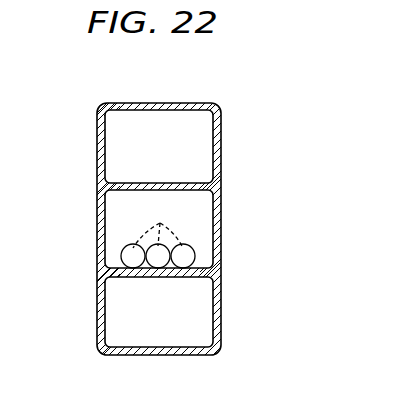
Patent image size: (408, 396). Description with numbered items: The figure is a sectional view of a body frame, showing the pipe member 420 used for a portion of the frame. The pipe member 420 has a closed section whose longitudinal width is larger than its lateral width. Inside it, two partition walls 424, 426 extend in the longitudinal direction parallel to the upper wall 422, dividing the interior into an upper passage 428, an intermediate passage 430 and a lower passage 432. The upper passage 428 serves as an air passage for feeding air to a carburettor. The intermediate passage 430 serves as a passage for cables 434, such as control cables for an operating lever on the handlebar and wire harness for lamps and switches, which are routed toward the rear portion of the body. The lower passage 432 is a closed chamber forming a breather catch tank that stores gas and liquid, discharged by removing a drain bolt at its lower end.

The pipe member 420 is at (88, 123).
The upper wall 422 is at (133, 103).
The partition wall 424 is at (190, 185).
The partition wall 426 is at (192, 278).
The upper passage 428 is at (183, 143).
The intermediate passage 430 is at (193, 216).
The lower passage 432 is at (183, 319).
The cables 434 is at (158, 234).